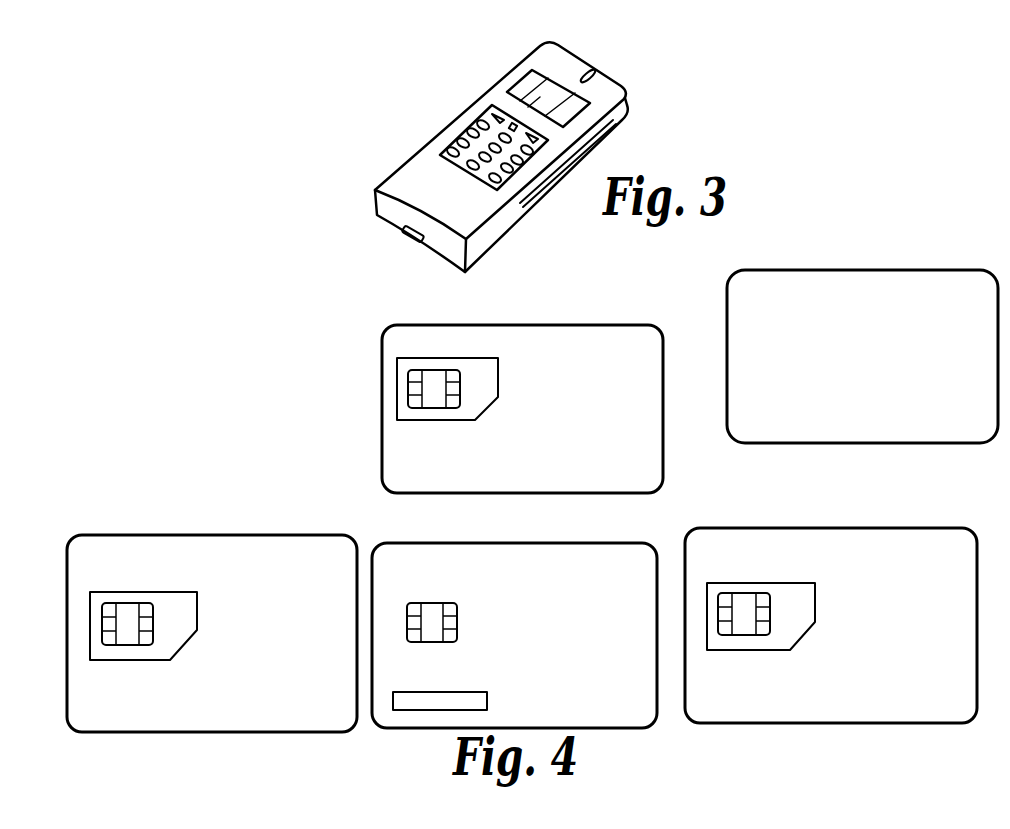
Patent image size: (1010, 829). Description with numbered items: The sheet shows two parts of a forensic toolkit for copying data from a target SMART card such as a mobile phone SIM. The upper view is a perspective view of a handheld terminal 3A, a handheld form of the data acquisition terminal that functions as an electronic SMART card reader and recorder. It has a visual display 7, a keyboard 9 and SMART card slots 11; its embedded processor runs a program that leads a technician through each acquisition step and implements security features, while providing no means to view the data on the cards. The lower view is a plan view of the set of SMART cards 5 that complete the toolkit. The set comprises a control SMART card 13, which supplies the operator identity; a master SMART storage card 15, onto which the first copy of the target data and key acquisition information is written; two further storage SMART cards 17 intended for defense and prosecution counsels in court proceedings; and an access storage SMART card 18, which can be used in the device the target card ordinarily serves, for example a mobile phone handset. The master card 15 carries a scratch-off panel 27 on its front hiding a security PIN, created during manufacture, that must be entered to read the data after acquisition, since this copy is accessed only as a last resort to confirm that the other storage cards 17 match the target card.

In FIG. 3, the handheld terminal 3A is at (477, 87).
In FIG. 4, the electronic SMART cards 5 is at (273, 412).
In FIG. 3, the visual display 7 is at (555, 92).
In FIG. 3, the keyboard 9 is at (473, 135).
In FIG. 3, the SMART card slots 11 is at (615, 80).
In FIG. 4, the control SMART card 13 is at (657, 354).
In FIG. 4, the master SMART storage card 15 is at (600, 550).
In FIG. 4, the storage SMART cards 17 is at (246, 538).
In FIG. 4, the access storage SMART card 18 is at (946, 280).
In FIG. 4, the scratch-off panel 27 is at (437, 698).